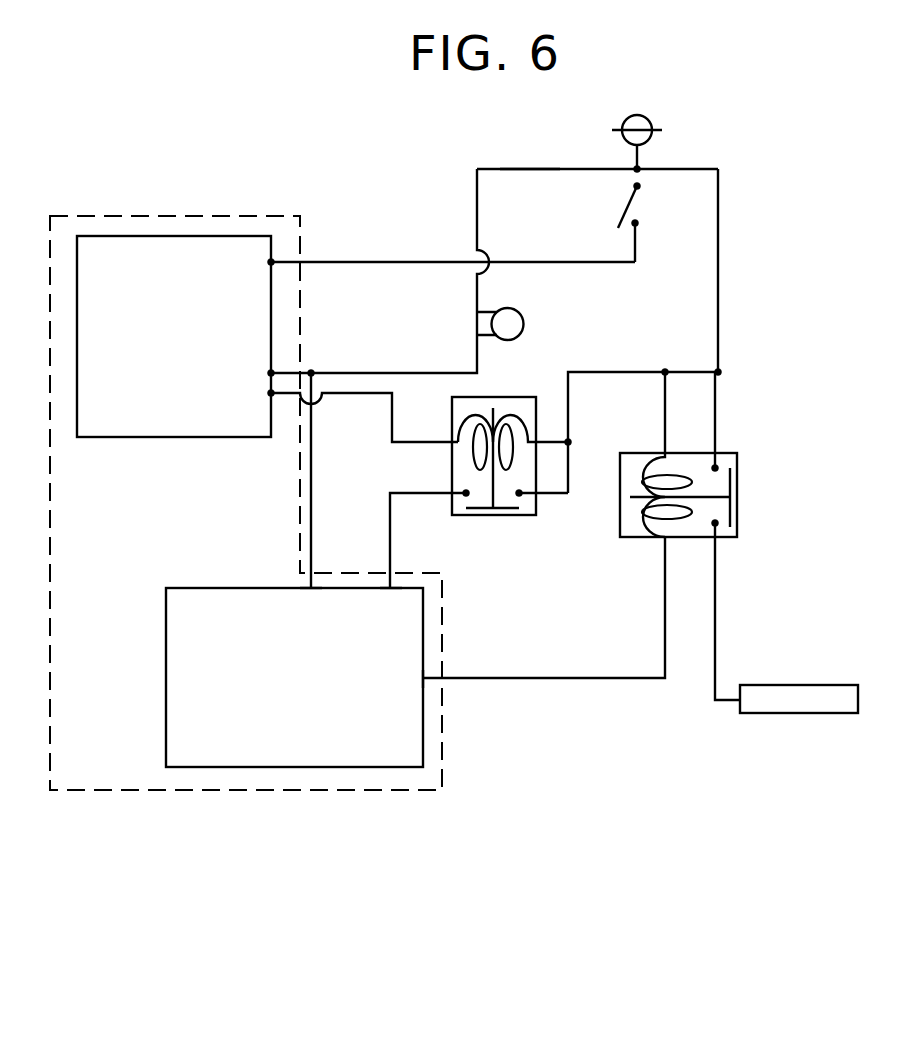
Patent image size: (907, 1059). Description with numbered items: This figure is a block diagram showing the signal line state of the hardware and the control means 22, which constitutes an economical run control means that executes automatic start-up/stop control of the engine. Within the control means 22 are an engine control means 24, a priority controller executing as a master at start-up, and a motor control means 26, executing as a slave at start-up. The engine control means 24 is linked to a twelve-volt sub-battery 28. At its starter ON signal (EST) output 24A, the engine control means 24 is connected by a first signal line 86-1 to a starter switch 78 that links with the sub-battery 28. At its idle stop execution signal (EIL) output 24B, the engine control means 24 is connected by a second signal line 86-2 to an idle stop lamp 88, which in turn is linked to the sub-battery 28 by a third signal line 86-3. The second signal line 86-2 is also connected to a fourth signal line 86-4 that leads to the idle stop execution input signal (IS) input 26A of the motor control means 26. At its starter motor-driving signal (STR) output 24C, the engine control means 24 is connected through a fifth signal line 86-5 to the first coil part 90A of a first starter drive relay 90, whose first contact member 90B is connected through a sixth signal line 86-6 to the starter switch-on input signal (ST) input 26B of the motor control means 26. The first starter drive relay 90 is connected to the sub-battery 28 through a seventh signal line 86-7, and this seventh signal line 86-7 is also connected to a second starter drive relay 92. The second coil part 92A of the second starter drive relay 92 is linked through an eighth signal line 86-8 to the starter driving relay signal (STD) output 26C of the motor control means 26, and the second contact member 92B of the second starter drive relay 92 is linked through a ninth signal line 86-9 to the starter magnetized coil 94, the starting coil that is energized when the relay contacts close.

The control means 22 is at (177, 203).
The engine control means 24 is at (120, 223).
The starter ON signal (EST) output 24A is at (274, 258).
The idle stop execution signal (EIL) output 24B is at (275, 370).
The starter motor-driving signal (STR) output 24C is at (275, 398).
The motor control means 26 is at (232, 784).
The idle stop execution input signal (IS) input 26A is at (305, 586).
The starter switch-on input signal (ST) input 26B is at (398, 589).
The starter driving relay signal (STD) output 26C is at (427, 679).
The sub-battery 28 is at (653, 121).
The starter switch 78 is at (641, 210).
The first signal line 86-1 is at (398, 260).
The second signal line 86-2 is at (417, 371).
The third signal line 86-3 is at (522, 167).
The fourth signal line 86-4 is at (313, 482).
The fifth signal line 86-5 is at (422, 444).
The sixth signal line 86-6 is at (388, 570).
The seventh signal line 86-7 is at (732, 273).
The eighth signal line 86-8 is at (568, 680).
The ninth signal line 86-9 is at (712, 662).
The idle stop lamp 88 is at (515, 309).
The first starter drive relay 90 is at (524, 479).
The first coil part 90A is at (508, 410).
The first contact member 90B is at (538, 510).
The second starter drive relay 92 is at (715, 463).
The second coil part 92A is at (632, 462).
The second contact member 92B is at (738, 531).
The starter magnetized coil 94 is at (804, 688).